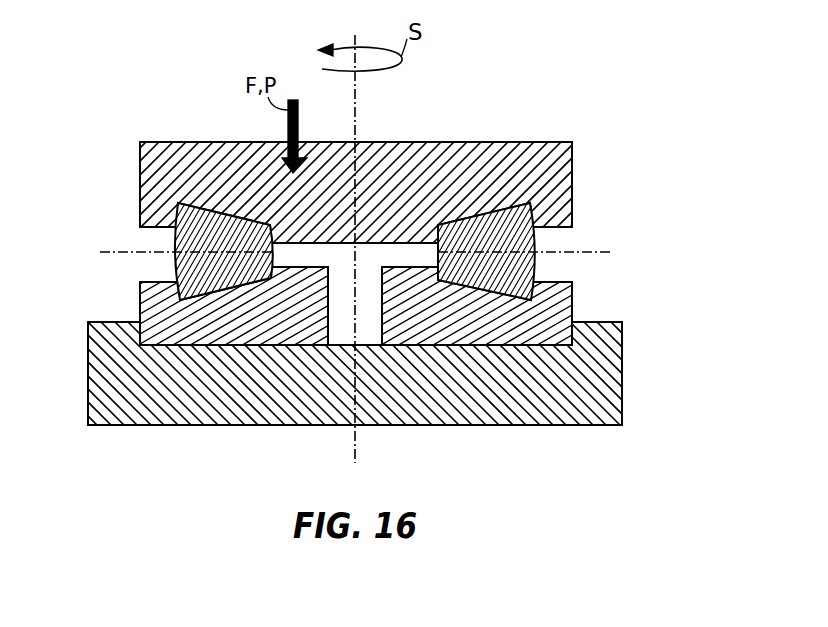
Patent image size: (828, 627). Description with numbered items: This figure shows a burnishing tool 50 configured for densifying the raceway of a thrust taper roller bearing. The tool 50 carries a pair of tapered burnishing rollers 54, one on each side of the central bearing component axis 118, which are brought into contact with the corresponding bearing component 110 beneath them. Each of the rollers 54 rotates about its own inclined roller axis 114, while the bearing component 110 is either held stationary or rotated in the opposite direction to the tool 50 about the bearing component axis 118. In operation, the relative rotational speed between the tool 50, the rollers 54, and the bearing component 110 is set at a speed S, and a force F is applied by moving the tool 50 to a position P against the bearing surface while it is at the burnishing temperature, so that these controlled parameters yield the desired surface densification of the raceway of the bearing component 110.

The burnishing tool 50 is at (586, 116).
The burnishing rollers 54 is at (213, 217).
The bearing component 110 is at (157, 312).
The roller axis 114 is at (124, 248).
The bearing component axis 118 is at (355, 436).